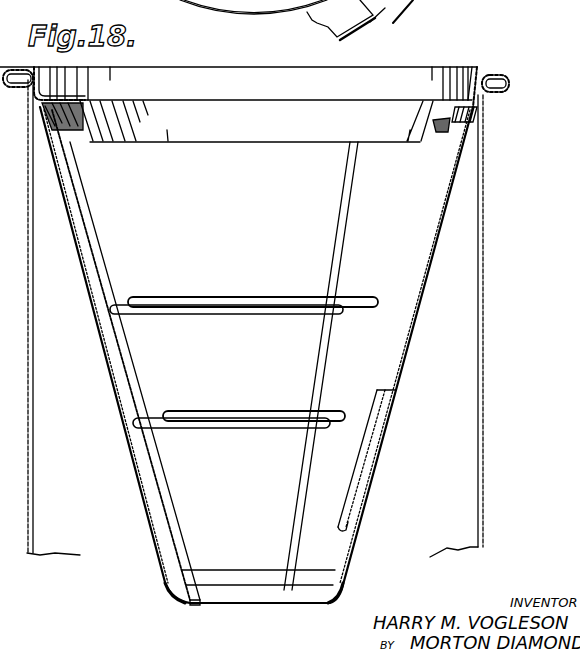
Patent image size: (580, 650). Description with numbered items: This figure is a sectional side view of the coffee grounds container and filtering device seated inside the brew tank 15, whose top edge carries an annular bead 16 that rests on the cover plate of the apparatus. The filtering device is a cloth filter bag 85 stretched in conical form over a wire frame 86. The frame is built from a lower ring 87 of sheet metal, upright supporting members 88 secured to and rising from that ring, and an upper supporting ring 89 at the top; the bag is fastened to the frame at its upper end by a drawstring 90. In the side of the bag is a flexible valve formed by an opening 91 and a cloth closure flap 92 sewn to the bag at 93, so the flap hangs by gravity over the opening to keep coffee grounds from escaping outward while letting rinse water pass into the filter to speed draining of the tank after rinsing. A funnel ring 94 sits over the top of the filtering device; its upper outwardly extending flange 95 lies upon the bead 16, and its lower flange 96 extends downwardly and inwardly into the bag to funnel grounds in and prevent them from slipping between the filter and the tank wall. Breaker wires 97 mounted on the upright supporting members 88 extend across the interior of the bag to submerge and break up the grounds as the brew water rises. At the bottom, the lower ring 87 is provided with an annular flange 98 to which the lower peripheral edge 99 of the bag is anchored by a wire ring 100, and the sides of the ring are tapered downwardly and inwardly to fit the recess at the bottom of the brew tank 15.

The brew tank 15 is at (482, 260).
The annular bead 16 is at (509, 87).
The cloth filter bag 85 is at (408, 353).
The wire frame 86 is at (189, 541).
The lower ring 87 is at (192, 604).
The upright supporting members 88 is at (292, 474).
The upper supporting ring 89 is at (462, 122).
The drawstring 90 is at (433, 123).
The opening 91 is at (373, 482).
The closure flap 92 is at (350, 508).
The sewn attachment of closure flap 93 is at (392, 400).
The funnel ring 94 is at (417, 68).
The upper outwardly extending flange 95 is at (512, 70).
The lower flange 96 is at (227, 138).
The breaker wires 97 is at (223, 308).
The annular flange 98 is at (322, 590).
The lower peripheral edge 99 is at (325, 604).
The wire ring 100 is at (178, 599).